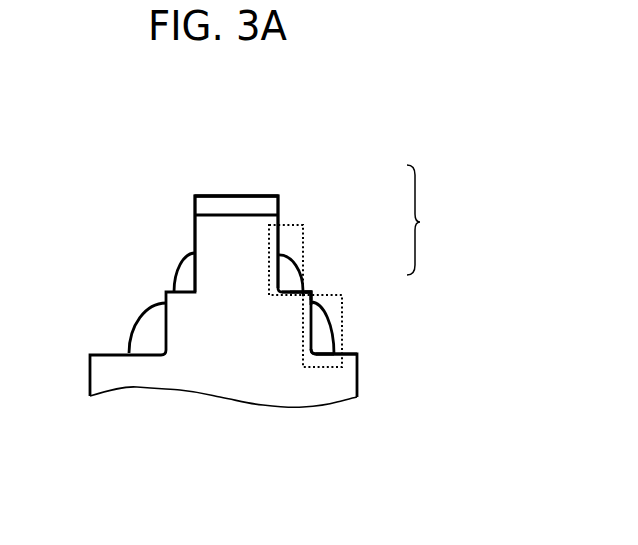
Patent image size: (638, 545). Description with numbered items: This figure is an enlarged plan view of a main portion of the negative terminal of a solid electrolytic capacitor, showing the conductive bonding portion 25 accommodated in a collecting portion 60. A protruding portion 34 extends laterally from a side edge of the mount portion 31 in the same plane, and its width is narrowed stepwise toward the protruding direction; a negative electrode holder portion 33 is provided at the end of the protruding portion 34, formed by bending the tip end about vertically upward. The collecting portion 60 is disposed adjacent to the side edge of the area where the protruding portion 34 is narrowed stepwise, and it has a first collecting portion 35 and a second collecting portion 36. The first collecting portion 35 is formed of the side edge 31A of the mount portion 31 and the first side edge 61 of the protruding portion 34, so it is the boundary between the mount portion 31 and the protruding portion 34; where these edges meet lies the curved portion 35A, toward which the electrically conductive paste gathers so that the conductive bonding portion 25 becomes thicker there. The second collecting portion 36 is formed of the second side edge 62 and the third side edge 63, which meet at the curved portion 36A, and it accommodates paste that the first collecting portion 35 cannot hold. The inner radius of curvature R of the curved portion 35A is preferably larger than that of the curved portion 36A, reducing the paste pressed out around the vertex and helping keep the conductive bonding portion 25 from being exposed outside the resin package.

The conductive bonding portion 25 is at (147, 334).
The mount portion 31 is at (112, 383).
The side edge of mount portion 31A is at (348, 355).
The negative electrode holder portion 33 is at (257, 202).
The protruding portion 34 is at (233, 293).
The first collecting portion 35 is at (327, 308).
The curved portion of first collecting portion 35A is at (310, 348).
The second collecting portion 36 is at (297, 243).
The curved portion of second collecting portion 36A is at (281, 295).
The collecting portion 60 is at (431, 220).
The first side edge 61 is at (306, 297).
The second side edge 62 is at (292, 295).
The third side edge 63 is at (280, 250).
The inner radius of curvature R is at (312, 347).